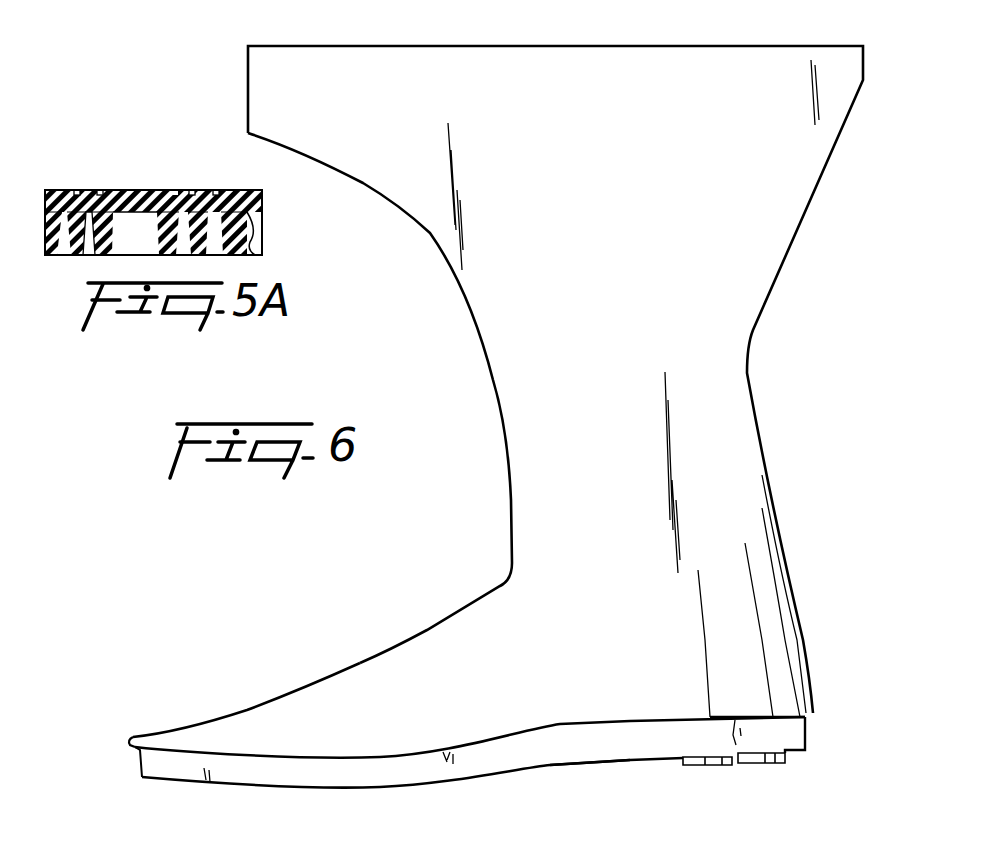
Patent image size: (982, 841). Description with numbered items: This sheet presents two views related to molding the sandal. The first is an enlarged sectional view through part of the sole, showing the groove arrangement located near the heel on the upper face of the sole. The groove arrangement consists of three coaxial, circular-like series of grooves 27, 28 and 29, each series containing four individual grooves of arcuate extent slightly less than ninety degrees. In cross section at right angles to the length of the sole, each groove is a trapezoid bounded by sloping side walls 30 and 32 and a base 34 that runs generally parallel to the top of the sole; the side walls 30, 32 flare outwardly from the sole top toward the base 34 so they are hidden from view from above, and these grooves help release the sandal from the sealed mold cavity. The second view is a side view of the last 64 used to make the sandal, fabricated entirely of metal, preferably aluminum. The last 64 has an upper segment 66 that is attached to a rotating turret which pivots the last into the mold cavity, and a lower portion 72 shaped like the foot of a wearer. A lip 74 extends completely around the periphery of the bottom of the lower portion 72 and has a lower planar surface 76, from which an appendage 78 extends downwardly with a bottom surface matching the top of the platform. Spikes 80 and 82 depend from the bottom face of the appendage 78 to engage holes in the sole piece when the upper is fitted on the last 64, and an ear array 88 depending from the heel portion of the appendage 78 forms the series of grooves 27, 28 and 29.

In FIG. 5A, the series of grooves 27 is at (174, 190).
In FIG. 5A, the series of grooves 28 is at (100, 192).
In FIG. 5A, the series of grooves 29 is at (77, 191).
In FIG. 5A, the sloping side wall 30 is at (62, 192).
In FIG. 5A, the sloping side wall 32 is at (91, 192).
In FIG. 5A, the base 34 is at (64, 207).
In FIG. 6, the last 64 is at (410, 256).
In FIG. 6, the upper segment 66 is at (280, 85).
In FIG. 6, the lower portion 72 is at (385, 691).
In FIG. 6, the lip 74 is at (130, 740).
In FIG. 6, the lower planar surface 76 is at (135, 749).
In FIG. 6, the appendage 78 is at (787, 730).
In FIG. 6, the spike 80 is at (330, 791).
In FIG. 6, the spike 82 is at (555, 767).
In FIG. 6, the ear array 88 is at (736, 768).